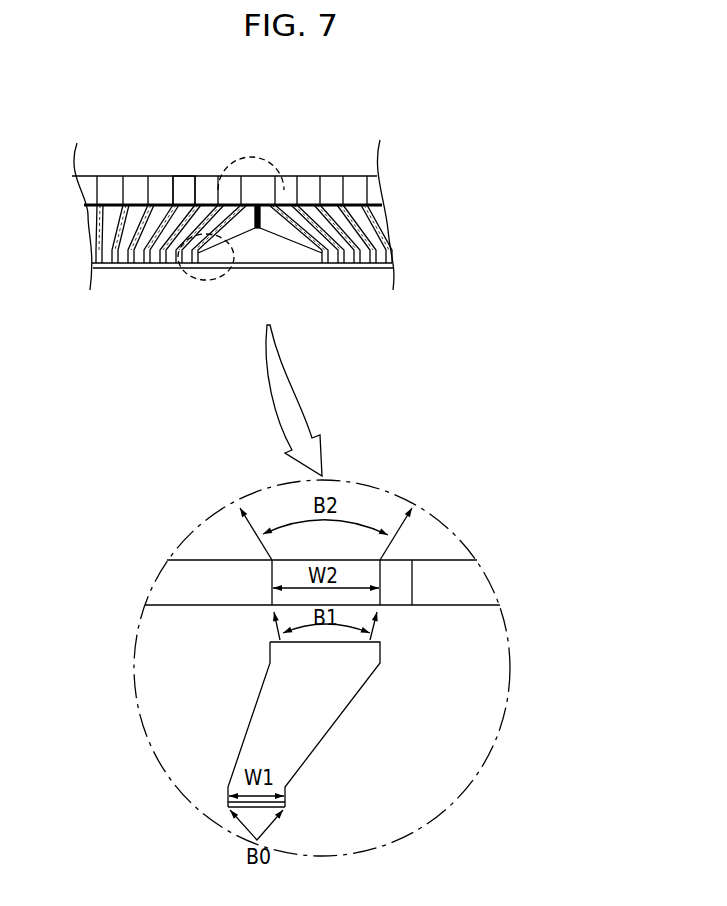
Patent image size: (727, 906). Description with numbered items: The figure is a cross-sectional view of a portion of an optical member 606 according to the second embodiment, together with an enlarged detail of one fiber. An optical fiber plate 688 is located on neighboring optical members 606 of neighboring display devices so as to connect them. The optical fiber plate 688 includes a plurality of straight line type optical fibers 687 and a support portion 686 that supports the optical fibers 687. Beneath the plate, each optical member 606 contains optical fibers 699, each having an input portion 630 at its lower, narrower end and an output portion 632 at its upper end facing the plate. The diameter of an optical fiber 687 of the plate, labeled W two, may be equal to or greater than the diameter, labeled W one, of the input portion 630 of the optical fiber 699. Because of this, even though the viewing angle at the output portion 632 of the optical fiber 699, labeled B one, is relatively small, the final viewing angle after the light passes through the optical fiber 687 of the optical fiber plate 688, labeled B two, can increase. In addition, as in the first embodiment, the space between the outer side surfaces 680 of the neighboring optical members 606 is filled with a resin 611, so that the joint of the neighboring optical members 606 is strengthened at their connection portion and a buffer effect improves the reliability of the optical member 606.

The optical member 606 is at (322, 289).
The resin 611 is at (260, 253).
The input portion 630 is at (120, 263).
The output portion 632 is at (138, 204).
The outer side surface 680 is at (228, 245).
The support portion 686 is at (223, 188).
The optical fiber 687 is at (185, 188).
The optical fiber plate 688 is at (389, 186).
The optical fiber 699 is at (333, 727).